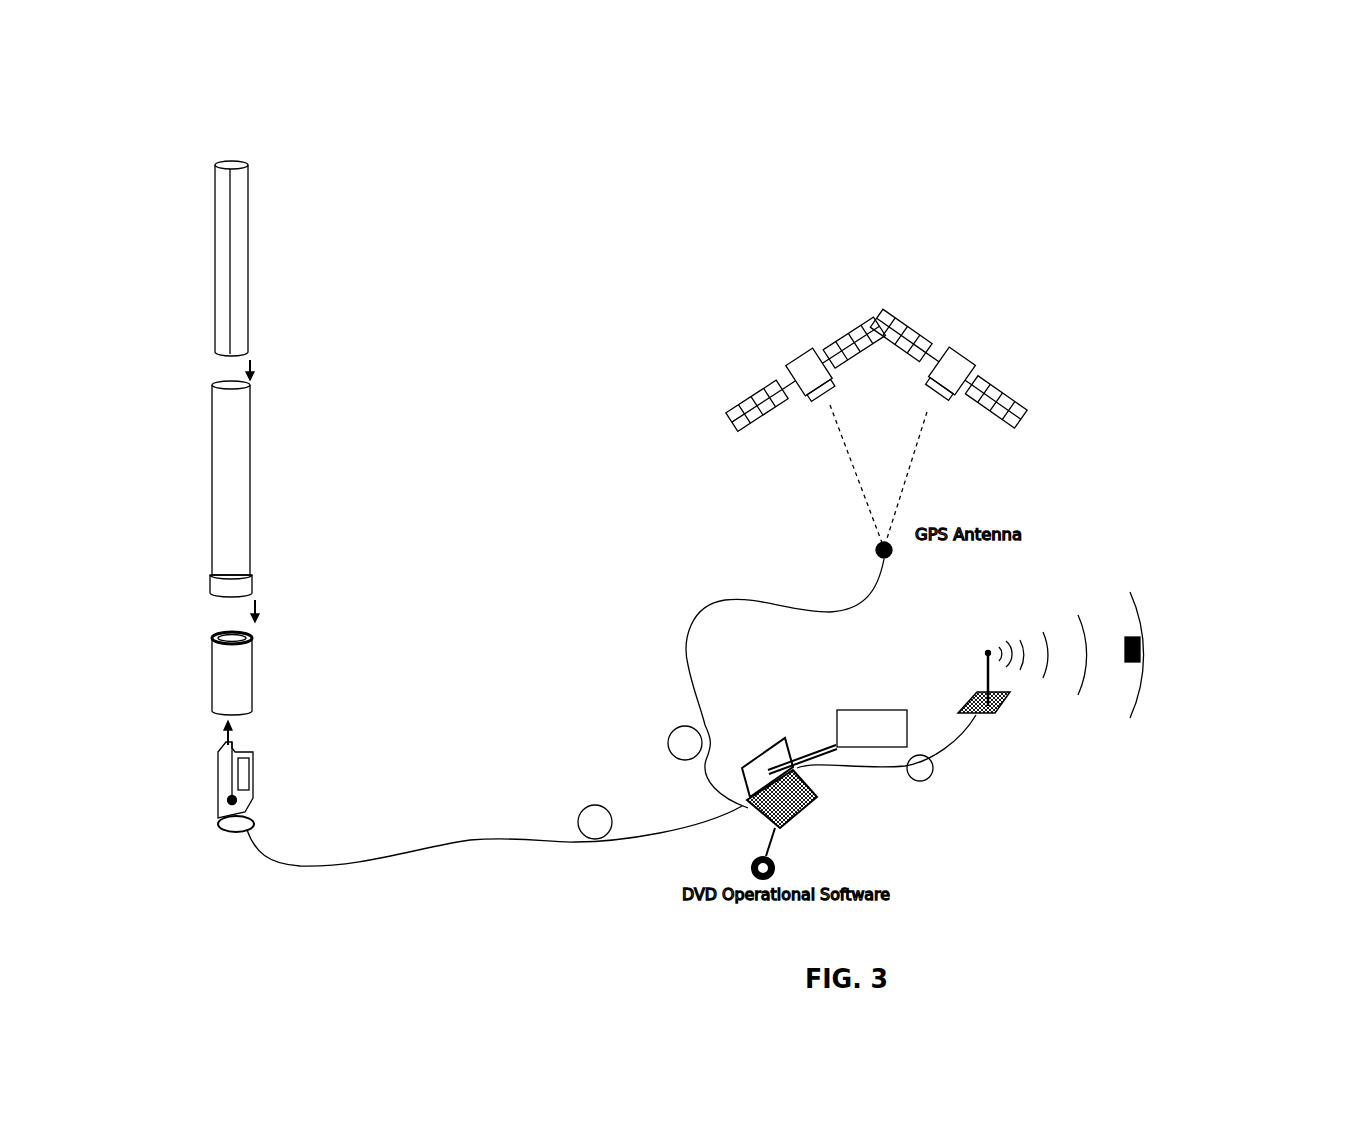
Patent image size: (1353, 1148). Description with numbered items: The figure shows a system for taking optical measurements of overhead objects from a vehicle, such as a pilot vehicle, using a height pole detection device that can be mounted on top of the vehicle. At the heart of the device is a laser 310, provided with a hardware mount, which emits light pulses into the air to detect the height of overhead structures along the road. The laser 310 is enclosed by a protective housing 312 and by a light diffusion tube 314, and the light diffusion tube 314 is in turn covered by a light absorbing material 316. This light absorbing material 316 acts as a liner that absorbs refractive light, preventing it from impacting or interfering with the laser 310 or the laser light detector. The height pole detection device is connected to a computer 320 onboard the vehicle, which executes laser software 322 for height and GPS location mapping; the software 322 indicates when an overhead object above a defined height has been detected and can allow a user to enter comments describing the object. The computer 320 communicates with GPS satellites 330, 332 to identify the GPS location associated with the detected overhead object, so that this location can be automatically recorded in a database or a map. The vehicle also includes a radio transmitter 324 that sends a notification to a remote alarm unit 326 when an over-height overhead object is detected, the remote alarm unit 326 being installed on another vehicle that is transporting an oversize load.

The laser 310 is at (271, 776).
The protective housing 312 is at (320, 673).
The light diffusion tube 314 is at (318, 501).
The light absorbing material 316 is at (336, 270).
The computer 320 is at (813, 797).
The laser software 322 is at (857, 705).
The radio transmitter 324 is at (1051, 676).
The remote alarm unit 326 is at (1195, 655).
The GPS satellite 330 is at (808, 377).
The GPS satellite 332 is at (946, 375).